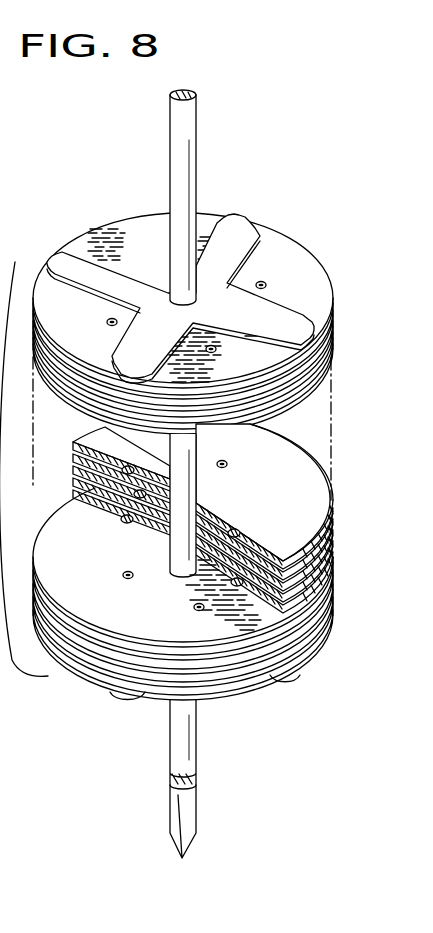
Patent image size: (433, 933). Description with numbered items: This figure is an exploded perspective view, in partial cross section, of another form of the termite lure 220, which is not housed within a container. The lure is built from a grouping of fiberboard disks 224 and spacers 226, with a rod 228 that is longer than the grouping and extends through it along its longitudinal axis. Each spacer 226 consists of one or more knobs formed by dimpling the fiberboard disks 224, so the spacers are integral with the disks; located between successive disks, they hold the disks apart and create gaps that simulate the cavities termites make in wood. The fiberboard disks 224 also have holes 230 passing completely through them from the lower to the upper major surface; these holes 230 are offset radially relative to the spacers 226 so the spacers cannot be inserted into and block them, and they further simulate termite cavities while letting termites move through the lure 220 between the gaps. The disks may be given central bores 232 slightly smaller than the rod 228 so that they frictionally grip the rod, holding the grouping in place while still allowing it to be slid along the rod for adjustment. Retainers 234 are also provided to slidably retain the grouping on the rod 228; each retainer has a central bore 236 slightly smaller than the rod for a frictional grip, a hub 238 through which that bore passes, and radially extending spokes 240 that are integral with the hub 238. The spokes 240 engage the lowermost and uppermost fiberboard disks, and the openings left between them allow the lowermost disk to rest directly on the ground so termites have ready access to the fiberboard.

The termite lure 220 is at (251, 130).
The fiberboard disks 224 is at (60, 393).
The spacers 226 is at (268, 283).
The rod 228 is at (168, 152).
The holes 230 is at (238, 351).
The central bores 232 is at (201, 503).
The retainers 234 is at (238, 215).
The central bore 236 is at (161, 292).
The hub 238 is at (149, 297).
The spokes 240 is at (82, 267).